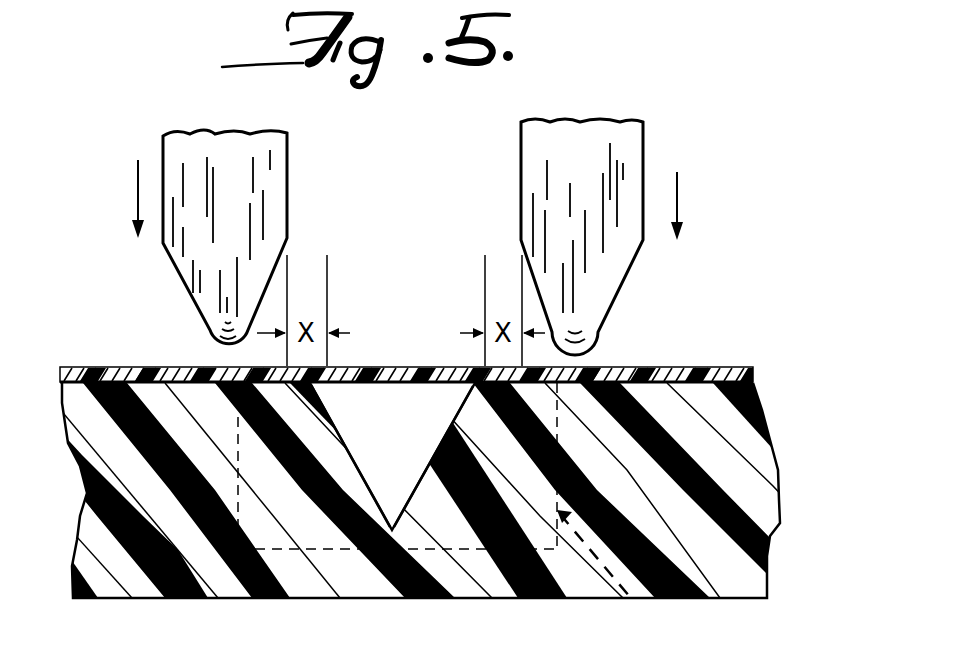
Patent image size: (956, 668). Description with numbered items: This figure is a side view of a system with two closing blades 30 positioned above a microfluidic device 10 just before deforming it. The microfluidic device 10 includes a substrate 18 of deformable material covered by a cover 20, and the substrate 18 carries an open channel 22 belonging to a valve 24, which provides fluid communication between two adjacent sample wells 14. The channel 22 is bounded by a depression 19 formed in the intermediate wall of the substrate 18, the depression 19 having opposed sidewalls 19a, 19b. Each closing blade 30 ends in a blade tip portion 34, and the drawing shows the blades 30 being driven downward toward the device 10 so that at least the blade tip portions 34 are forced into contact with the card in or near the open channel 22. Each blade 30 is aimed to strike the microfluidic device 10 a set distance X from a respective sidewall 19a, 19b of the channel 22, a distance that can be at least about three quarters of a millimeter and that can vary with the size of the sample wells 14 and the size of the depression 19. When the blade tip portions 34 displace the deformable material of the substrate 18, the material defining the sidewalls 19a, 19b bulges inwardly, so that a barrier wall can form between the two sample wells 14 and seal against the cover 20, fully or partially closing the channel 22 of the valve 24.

The microfluidic device 10 is at (94, 300).
The sample well 14 is at (637, 613).
The substrate 18 is at (747, 441).
The depression 19 is at (388, 507).
The sidewall 19a is at (343, 440).
The sidewall 19b is at (432, 452).
The cover 20 is at (727, 363).
The channel 22 is at (392, 437).
The valve 24 is at (392, 342).
The closing blade 30 is at (273, 182).
The blade tip portion 34 is at (205, 328).